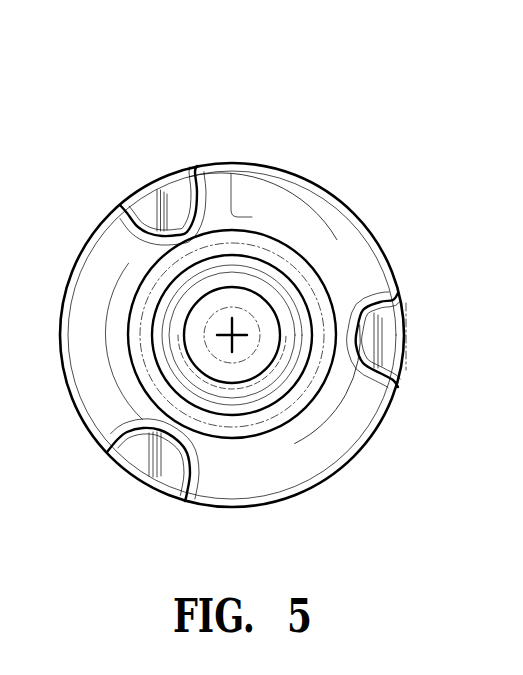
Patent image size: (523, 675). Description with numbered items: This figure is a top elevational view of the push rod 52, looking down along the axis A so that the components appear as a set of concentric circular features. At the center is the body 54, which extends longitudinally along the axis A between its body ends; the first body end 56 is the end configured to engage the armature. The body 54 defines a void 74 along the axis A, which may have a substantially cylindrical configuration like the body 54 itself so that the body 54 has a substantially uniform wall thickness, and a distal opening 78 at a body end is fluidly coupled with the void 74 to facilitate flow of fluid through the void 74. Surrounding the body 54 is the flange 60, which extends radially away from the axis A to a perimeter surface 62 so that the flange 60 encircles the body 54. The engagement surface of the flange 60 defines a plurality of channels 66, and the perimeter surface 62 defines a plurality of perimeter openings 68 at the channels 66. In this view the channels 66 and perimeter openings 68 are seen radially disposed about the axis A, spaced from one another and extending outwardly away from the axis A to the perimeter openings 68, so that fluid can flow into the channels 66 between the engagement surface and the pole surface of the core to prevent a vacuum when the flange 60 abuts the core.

The push rod 52 is at (355, 150).
The body 54 is at (262, 232).
The first body end 56 is at (185, 236).
The flange 60 is at (341, 203).
The perimeter surface 62 is at (80, 415).
The channel 66 is at (373, 353).
The perimeter opening 68 is at (413, 333).
The void 74 is at (258, 315).
The distal opening 78 is at (212, 370).
The axis A is at (230, 333).